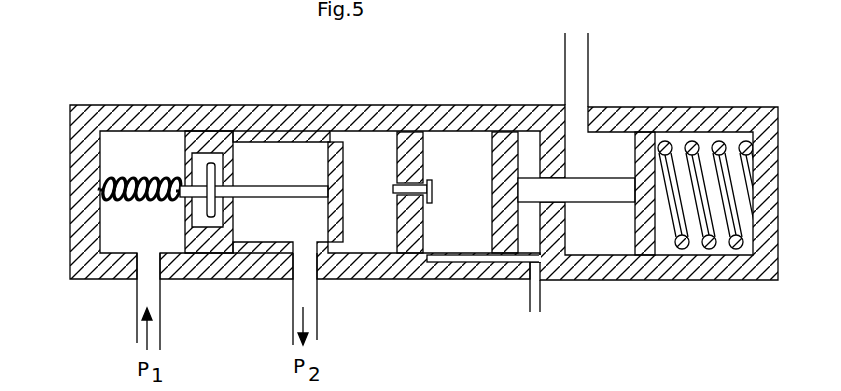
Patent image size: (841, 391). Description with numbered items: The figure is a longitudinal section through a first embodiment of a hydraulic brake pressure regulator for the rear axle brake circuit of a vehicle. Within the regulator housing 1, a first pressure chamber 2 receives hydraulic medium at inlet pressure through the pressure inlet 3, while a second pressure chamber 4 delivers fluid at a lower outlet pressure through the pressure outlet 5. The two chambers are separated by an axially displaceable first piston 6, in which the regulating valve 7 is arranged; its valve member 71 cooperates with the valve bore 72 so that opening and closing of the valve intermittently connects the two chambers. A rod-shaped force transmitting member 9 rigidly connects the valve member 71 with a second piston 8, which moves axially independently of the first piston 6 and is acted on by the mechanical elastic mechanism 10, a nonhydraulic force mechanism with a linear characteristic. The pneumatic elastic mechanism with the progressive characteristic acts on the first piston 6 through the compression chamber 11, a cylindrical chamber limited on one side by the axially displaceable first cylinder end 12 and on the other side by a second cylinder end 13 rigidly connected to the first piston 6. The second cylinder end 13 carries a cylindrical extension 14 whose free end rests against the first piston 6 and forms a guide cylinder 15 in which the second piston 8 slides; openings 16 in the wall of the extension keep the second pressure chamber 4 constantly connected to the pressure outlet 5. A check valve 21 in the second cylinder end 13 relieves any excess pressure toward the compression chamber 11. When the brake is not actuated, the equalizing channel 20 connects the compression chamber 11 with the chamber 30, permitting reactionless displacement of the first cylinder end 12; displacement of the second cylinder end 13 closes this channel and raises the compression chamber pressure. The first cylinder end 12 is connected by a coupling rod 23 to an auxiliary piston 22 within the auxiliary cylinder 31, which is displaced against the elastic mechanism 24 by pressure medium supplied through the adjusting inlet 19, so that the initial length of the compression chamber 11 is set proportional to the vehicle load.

The regulator housing 1 is at (123, 115).
The first pressure chamber 2 is at (112, 145).
The pressure inlet 3 is at (148, 290).
The second pressure chamber 4 is at (292, 158).
The pressure outlet 5 is at (308, 290).
The first piston 6 is at (207, 250).
The regulating valve 7 is at (194, 169).
The valve member 71 is at (208, 160).
The valve bore 72 is at (212, 163).
The second piston 8 is at (333, 140).
The rod-shaped force transmitting member 9 is at (253, 183).
The mechanical elastic mechanism 10 is at (103, 200).
The compression chamber 11 is at (472, 145).
The first cylinder end 12 is at (512, 142).
The second cylinder end 13 is at (405, 150).
The cylindrical extension 14 is at (337, 245).
The guide cylinder 15 is at (367, 228).
The openings 16 is at (268, 245).
The adjusting inlet 19 is at (578, 57).
The equalizing channel 20 is at (483, 262).
The check valve 21 is at (395, 180).
The auxiliary piston 22 is at (655, 147).
The coupling rod 23 is at (605, 187).
The elastic mechanism 24 is at (713, 167).
The chamber 30 is at (527, 235).
The auxiliary cylinder 31 is at (603, 238).